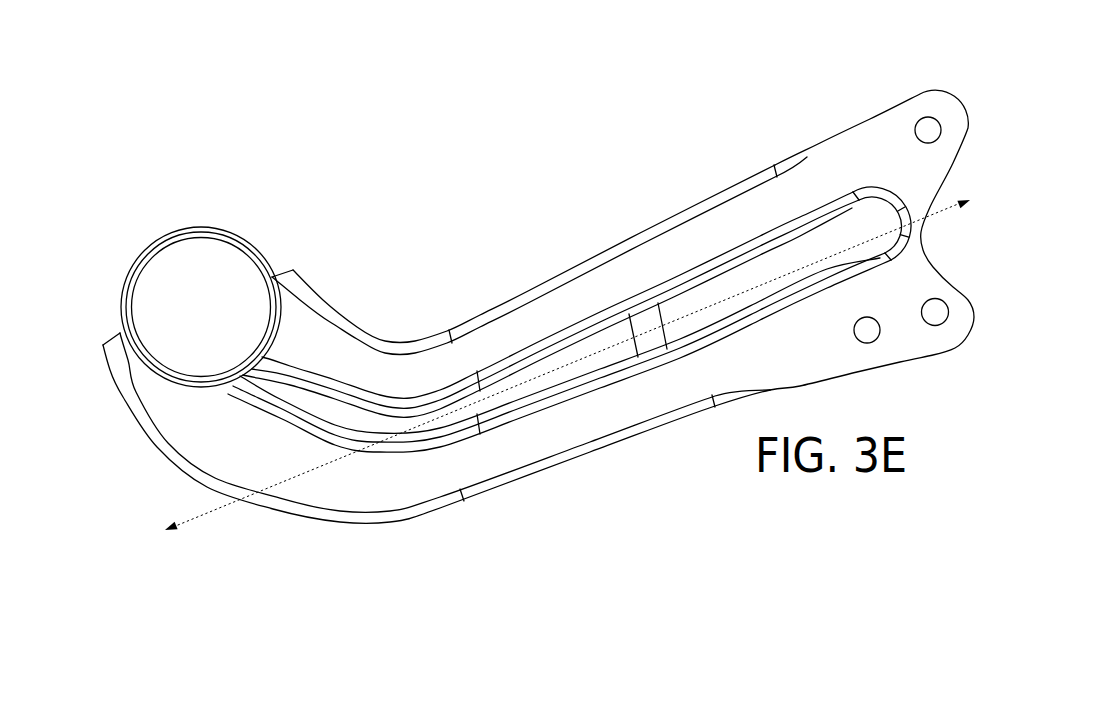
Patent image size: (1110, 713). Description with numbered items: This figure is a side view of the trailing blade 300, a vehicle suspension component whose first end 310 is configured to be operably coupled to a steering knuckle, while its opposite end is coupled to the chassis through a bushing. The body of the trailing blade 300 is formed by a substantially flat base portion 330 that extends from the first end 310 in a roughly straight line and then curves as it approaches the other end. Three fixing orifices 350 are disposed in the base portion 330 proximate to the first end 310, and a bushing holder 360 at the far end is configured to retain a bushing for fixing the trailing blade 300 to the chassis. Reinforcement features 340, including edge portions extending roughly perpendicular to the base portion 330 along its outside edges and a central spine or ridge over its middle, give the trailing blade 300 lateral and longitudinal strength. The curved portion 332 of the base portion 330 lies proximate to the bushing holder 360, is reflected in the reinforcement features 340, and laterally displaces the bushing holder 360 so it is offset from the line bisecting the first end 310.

The trailing blade 300 is at (452, 243).
The first end 310 is at (967, 132).
The base portion 330 is at (720, 223).
The curved portion 332 is at (418, 512).
The reinforcement features 340 is at (492, 303).
The fixing orifices 350 is at (915, 128).
The bushing holder 360 is at (175, 225).